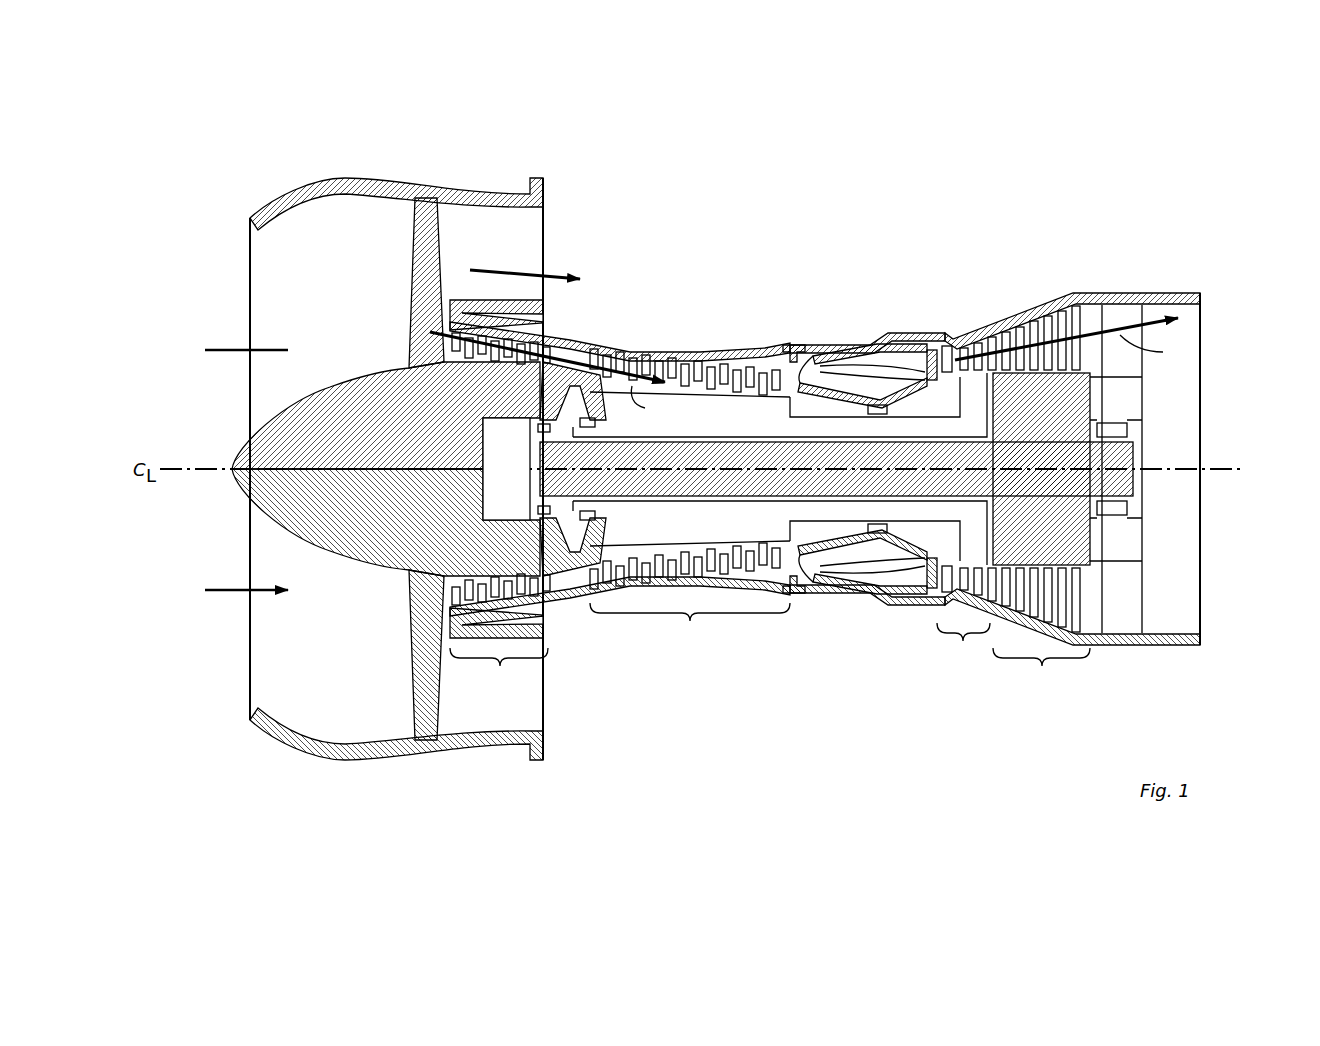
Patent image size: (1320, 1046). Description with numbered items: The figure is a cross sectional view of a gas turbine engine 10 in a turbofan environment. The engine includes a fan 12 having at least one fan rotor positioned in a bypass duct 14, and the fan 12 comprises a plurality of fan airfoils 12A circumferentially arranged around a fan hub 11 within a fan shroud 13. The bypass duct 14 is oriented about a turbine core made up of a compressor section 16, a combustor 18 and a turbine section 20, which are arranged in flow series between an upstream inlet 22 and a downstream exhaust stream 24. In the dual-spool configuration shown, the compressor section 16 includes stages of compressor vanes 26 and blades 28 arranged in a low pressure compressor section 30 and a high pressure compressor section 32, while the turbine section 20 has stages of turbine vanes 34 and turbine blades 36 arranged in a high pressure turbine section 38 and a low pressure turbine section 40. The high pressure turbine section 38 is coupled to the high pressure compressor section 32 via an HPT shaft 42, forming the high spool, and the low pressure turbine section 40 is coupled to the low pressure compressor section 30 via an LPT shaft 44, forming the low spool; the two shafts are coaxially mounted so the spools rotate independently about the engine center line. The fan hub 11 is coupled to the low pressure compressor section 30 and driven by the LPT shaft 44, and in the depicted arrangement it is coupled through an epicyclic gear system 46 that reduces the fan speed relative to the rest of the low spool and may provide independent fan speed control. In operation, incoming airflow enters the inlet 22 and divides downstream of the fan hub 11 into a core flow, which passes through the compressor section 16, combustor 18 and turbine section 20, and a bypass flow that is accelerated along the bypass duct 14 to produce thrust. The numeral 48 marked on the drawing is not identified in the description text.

The gas turbine engine 10 is at (1157, 163).
The fan hub 11 is at (290, 430).
The fan 12 is at (365, 469).
The fan airfoils 12A is at (426, 321).
The fan shroud 13 is at (343, 190).
The bypass duct 14 is at (535, 261).
The compressor section 16 is at (708, 522).
The combustor 18 is at (868, 370).
The turbine section 20 is at (1094, 511).
The inlet 22 is at (215, 296).
The exhaust stream 24 is at (1182, 410).
The compressor vanes 26 is at (705, 380).
The compressor blades 28 is at (690, 546).
The low pressure compressor section 30 is at (500, 666).
The high pressure compressor section 32 is at (690, 627).
The turbine vanes 34 is at (938, 350).
The turbine blades 36 is at (957, 345).
The high pressure turbine section 38 is at (966, 501).
The low pressure turbine section 40 is at (1041, 501).
The HPT shaft 42 is at (878, 425).
The LPT shaft 44 is at (1125, 478).
The epicyclic gear system 46 is at (515, 479).
The compressor casing 48 is at (660, 360).